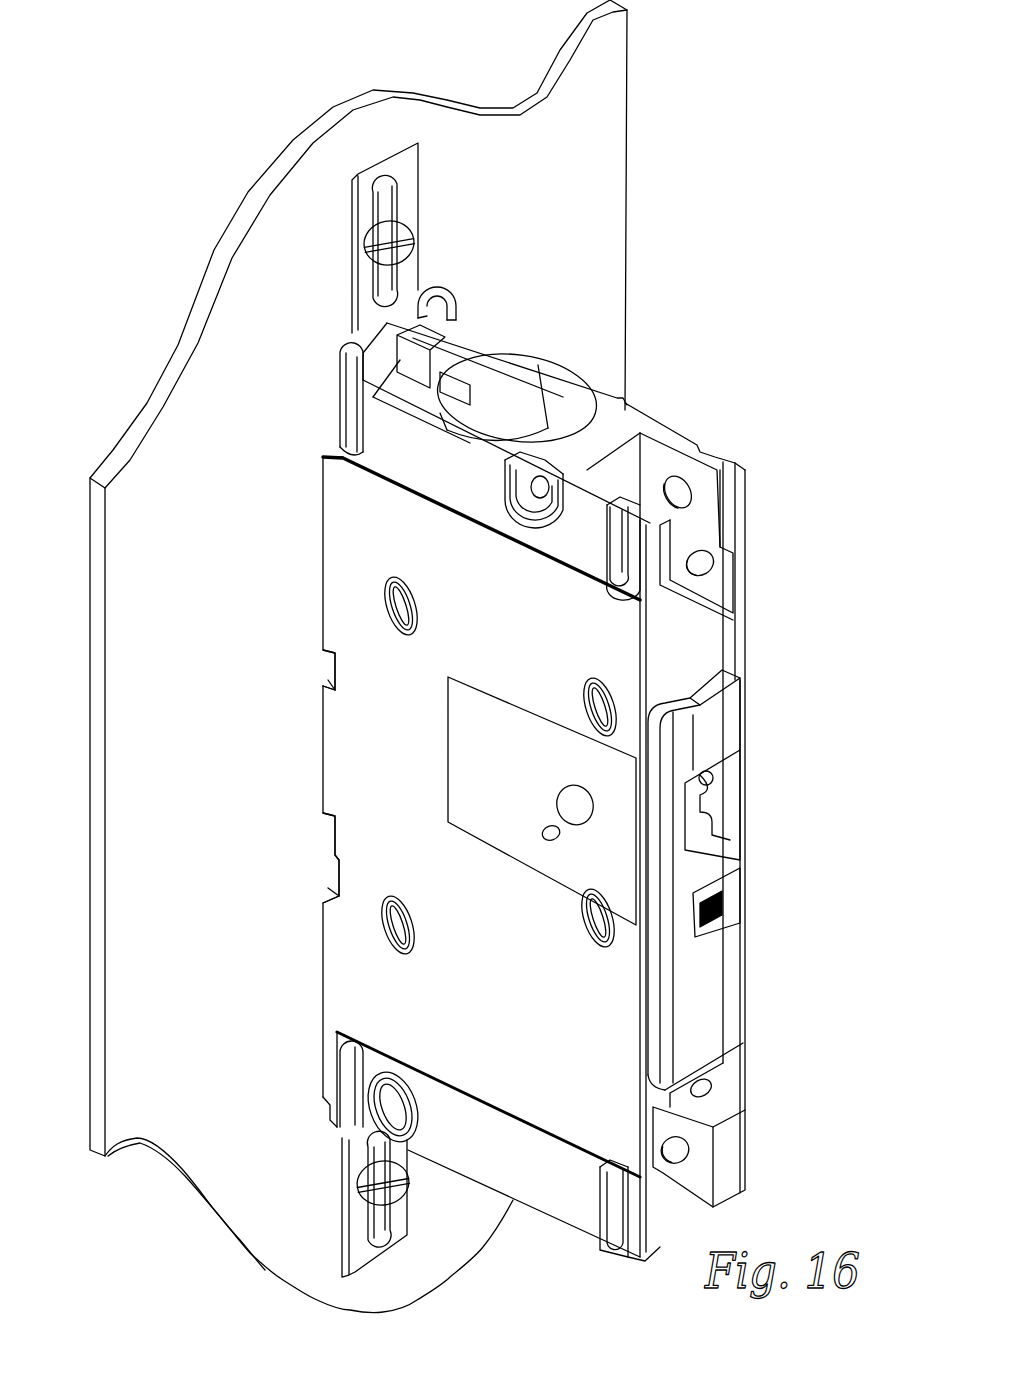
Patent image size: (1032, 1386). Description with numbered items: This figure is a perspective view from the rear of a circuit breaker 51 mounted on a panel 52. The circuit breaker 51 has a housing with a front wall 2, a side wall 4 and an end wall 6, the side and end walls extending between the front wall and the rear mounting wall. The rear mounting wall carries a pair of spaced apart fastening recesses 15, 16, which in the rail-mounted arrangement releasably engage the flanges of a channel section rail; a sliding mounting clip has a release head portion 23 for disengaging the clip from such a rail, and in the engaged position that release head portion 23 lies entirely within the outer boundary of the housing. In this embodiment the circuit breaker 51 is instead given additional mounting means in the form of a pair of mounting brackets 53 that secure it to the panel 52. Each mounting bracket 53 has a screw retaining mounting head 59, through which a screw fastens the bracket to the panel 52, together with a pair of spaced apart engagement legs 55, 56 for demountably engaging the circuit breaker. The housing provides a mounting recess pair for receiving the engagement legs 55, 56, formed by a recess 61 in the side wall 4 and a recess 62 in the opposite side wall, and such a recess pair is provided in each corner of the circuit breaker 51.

The front wall 2 is at (727, 722).
The side wall 4 is at (499, 997).
The end wall 6 is at (503, 350).
The fastening recess 15 is at (314, 664).
The fastening recess 16 is at (314, 837).
The release head portion 23 is at (423, 347).
The circuit breaker 51 is at (698, 362).
The panel 52 is at (208, 976).
The mounting bracket 53 is at (340, 265).
The engagement leg 55 is at (330, 368).
The engagement leg 56 is at (453, 300).
The screw retaining mounting head 59 is at (425, 182).
The recess 61 is at (617, 547).
The recess 62 is at (718, 445).